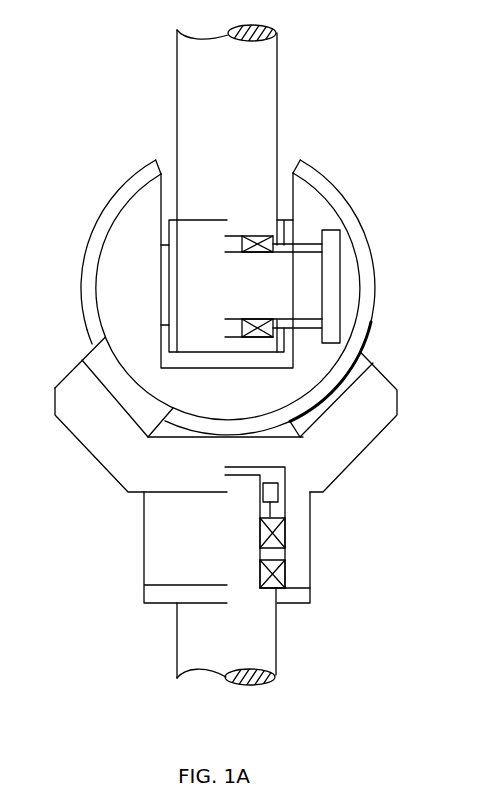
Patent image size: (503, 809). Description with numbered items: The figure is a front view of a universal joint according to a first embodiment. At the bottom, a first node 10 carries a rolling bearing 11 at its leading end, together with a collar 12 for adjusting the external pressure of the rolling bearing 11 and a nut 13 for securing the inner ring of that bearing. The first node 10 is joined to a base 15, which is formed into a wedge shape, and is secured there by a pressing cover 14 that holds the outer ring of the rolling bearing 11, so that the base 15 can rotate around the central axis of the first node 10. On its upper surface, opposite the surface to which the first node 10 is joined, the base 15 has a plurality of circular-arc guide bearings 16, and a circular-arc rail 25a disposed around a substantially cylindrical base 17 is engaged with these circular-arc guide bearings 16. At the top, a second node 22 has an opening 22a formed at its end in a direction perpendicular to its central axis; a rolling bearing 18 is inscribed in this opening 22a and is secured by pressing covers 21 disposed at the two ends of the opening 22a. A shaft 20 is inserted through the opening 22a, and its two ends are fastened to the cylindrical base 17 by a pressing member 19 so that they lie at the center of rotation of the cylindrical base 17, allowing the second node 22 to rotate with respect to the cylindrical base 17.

The first node 10 is at (183, 633).
The rolling bearing 11 is at (280, 584).
The collar 12 is at (268, 512).
The nut 13 is at (278, 494).
The pressing cover 14 is at (150, 595).
The base 15 is at (388, 412).
The circular-arc guide bearings 16 is at (94, 368).
The cylindrical base 17 is at (140, 212).
The rolling bearing 18 is at (372, 363).
The pressing member 19 is at (333, 296).
The shaft 20 is at (307, 270).
The pressing covers 21 is at (288, 228).
The second node 22 is at (186, 80).
The opening 22a is at (232, 244).
The circular-arc rail 25a is at (88, 265).